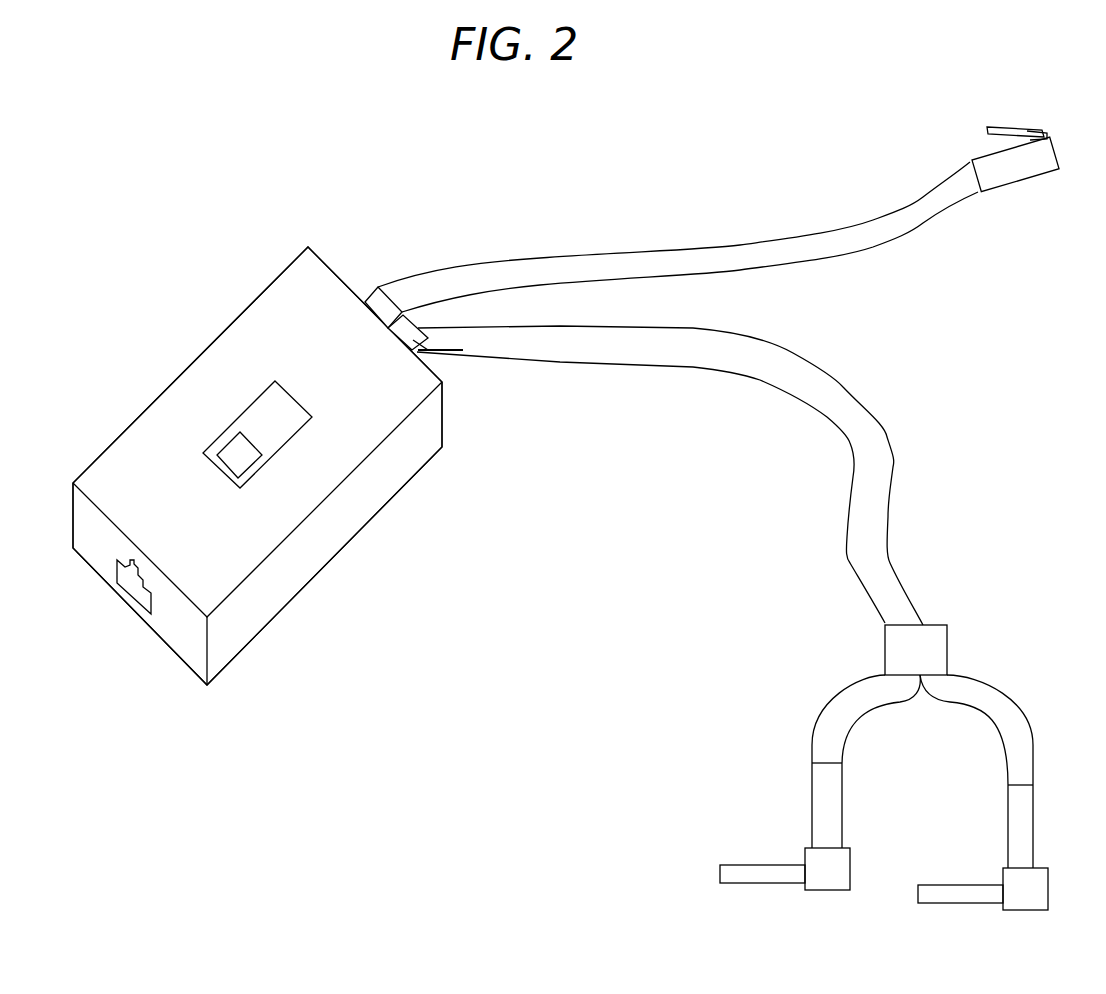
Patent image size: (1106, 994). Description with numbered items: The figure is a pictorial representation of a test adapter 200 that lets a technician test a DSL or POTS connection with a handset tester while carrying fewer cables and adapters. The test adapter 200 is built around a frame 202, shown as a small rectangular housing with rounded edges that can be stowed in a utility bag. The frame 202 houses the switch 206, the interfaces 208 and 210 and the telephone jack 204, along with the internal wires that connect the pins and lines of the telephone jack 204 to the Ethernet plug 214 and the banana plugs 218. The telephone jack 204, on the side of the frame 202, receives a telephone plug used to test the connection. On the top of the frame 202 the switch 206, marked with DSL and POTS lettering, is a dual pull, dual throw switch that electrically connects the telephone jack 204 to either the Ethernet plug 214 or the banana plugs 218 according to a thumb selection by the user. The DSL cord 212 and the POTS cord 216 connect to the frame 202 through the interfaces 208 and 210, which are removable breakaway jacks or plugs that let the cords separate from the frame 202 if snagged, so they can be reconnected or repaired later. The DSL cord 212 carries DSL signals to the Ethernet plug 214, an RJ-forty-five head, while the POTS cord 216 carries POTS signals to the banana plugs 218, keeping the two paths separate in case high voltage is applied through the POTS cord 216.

The test adapter 200 is at (288, 268).
The frame 202 is at (257, 323).
The telephone jack 204 is at (130, 583).
The switch 206 is at (263, 415).
The interface 208 is at (383, 306).
The interface 210 is at (417, 352).
The DSL cord 212 is at (763, 265).
The Ethernet plug 214 is at (997, 162).
The POTS cord 216 is at (703, 348).
The banana plugs 218 is at (940, 895).